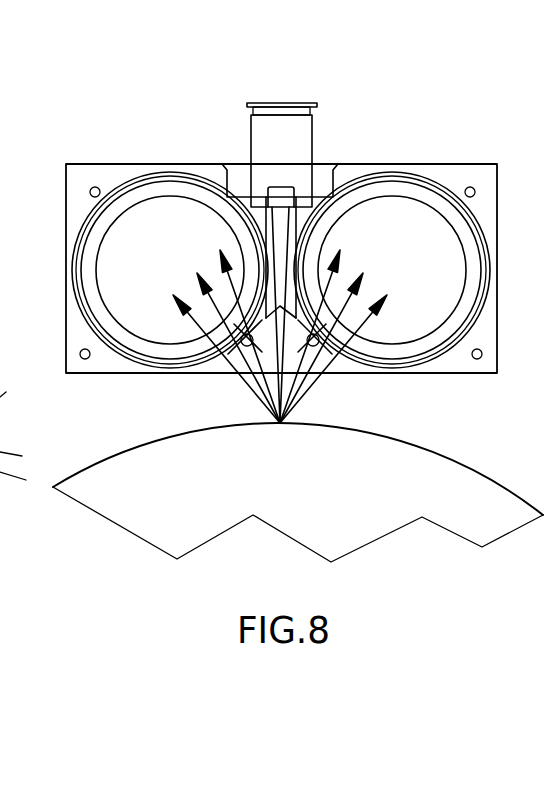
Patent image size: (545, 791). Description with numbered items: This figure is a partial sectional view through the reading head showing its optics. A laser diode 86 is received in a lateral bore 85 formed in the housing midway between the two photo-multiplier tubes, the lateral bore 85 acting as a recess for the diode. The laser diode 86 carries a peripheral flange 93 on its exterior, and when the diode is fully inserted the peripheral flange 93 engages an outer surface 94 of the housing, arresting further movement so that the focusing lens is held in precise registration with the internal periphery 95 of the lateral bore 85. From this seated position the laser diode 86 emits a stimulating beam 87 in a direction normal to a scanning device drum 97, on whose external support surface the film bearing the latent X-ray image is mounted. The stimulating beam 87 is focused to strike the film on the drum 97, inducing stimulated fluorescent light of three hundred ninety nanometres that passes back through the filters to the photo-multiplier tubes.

The lateral bore 85 is at (323, 178).
The laser diode 86 is at (252, 133).
The stimulating beam 87 is at (288, 357).
The peripheral flange 93 is at (318, 108).
The outer surface 94 is at (463, 164).
The internal periphery 95 is at (281, 190).
The scanning device drum 97 is at (448, 500).